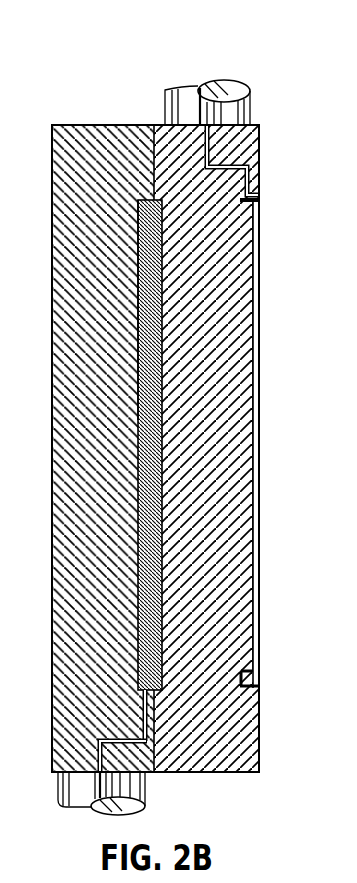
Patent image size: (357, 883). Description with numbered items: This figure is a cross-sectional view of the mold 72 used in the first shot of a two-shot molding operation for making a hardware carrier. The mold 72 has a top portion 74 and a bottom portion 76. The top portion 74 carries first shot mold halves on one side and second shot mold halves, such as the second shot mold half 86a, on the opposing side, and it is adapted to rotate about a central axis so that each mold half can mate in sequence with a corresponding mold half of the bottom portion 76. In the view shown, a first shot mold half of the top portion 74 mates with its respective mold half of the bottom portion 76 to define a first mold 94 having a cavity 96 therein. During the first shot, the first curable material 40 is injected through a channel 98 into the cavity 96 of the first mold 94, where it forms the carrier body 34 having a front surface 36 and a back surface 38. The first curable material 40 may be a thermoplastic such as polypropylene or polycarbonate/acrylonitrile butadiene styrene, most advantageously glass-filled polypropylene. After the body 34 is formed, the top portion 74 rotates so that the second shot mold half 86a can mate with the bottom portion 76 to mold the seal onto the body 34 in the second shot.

The mold 72 is at (288, 56).
The top portion 74 is at (246, 748).
The bottom portion 76 is at (73, 135).
The first mold 94 is at (153, 116).
The body 34 is at (138, 530).
The front surface 36 is at (163, 317).
The back surface 38 is at (138, 360).
The first curable material 40 is at (138, 262).
The second shot mold half 86a is at (259, 375).
The cavity 96 is at (142, 692).
The channel 98 is at (140, 717).